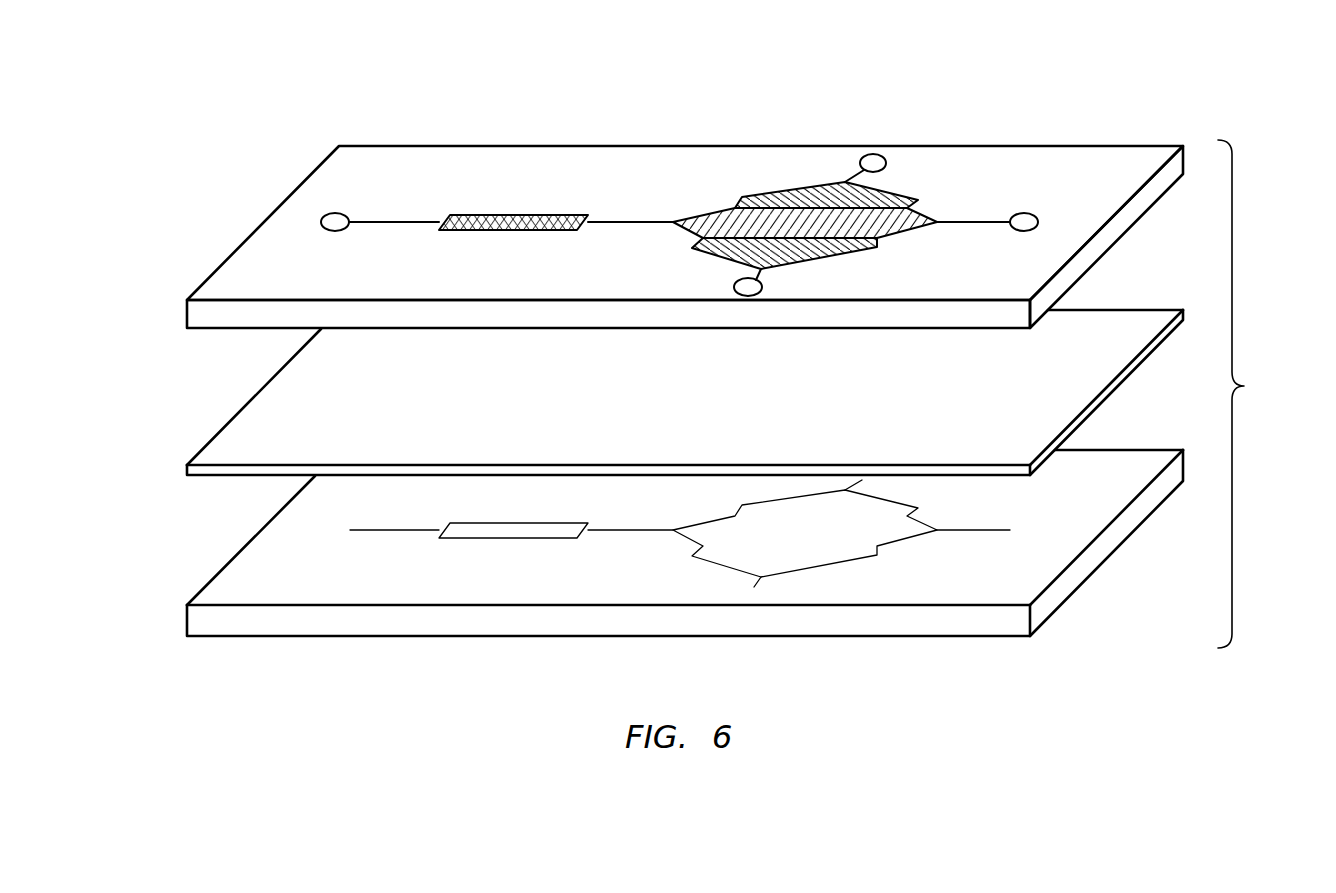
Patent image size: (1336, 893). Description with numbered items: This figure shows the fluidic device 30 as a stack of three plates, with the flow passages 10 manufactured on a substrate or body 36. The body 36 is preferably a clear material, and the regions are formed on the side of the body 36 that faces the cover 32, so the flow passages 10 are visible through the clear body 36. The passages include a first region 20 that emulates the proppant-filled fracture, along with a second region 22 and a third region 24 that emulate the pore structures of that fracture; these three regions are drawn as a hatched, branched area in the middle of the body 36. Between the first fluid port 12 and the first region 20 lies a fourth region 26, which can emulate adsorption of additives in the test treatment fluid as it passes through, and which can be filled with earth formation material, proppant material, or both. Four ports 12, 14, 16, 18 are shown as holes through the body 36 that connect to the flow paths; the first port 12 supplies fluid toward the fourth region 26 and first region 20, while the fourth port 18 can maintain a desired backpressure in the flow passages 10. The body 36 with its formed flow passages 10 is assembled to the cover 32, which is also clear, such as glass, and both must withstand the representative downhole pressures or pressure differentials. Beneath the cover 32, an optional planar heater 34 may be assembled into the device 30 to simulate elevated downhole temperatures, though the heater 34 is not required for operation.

The flow passages 10 is at (595, 137).
The first fluid port 12 is at (322, 218).
The second fluid port 14 is at (879, 152).
The third fluid port 16 is at (764, 292).
The fourth fluid port 18 is at (1014, 214).
The first region 20 is at (775, 222).
The second region 22 is at (807, 193).
The third region 24 is at (727, 251).
The fourth region 26 is at (490, 218).
The fluidic device 30 is at (1244, 386).
The cover 32 is at (208, 437).
The planar heater 34 is at (220, 568).
The body 36 is at (186, 310).